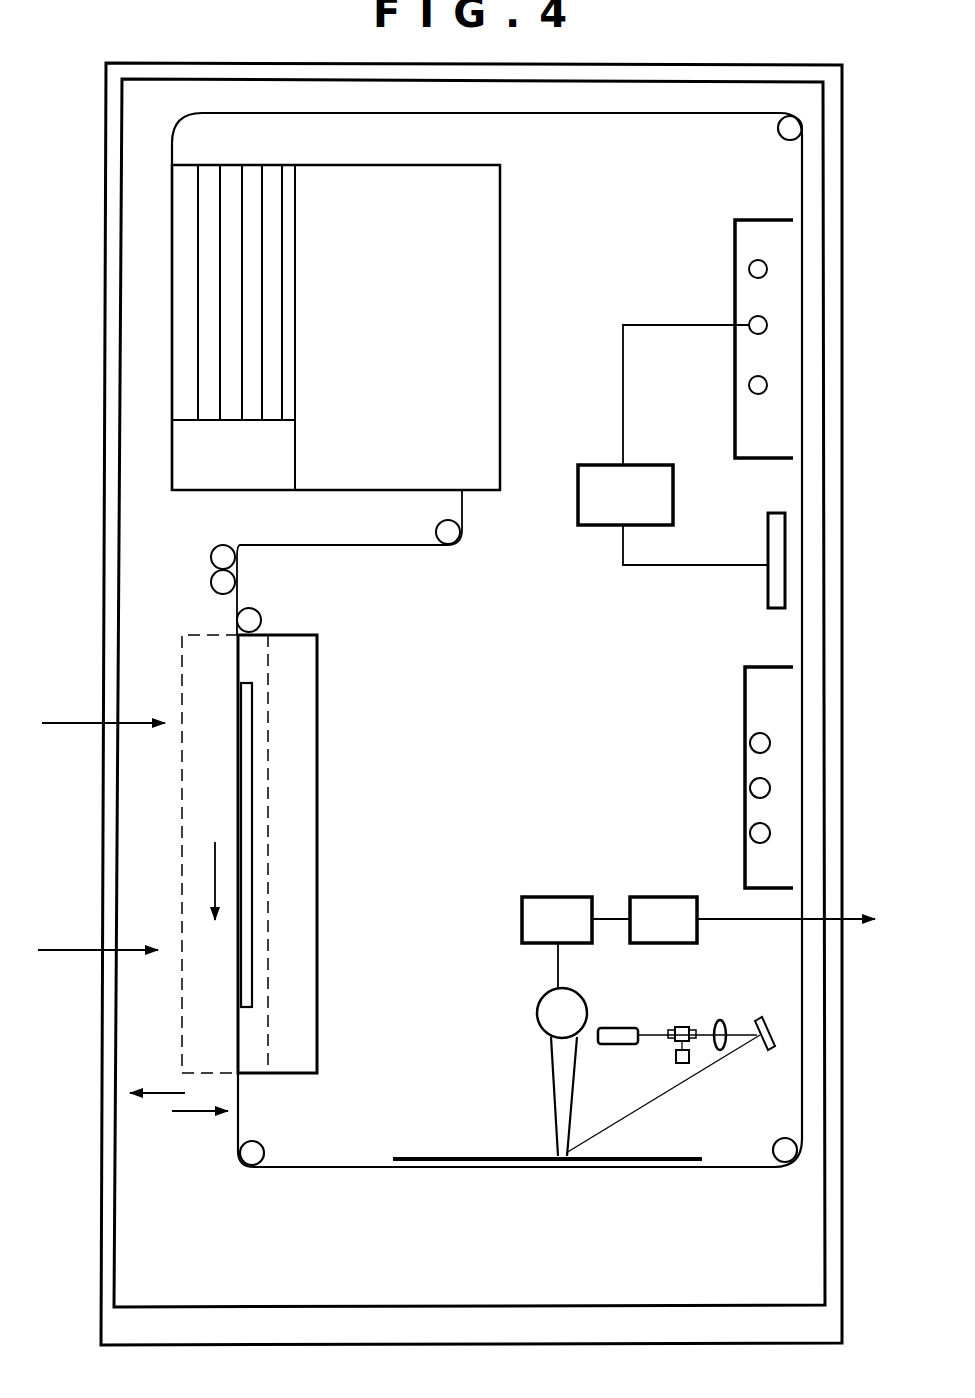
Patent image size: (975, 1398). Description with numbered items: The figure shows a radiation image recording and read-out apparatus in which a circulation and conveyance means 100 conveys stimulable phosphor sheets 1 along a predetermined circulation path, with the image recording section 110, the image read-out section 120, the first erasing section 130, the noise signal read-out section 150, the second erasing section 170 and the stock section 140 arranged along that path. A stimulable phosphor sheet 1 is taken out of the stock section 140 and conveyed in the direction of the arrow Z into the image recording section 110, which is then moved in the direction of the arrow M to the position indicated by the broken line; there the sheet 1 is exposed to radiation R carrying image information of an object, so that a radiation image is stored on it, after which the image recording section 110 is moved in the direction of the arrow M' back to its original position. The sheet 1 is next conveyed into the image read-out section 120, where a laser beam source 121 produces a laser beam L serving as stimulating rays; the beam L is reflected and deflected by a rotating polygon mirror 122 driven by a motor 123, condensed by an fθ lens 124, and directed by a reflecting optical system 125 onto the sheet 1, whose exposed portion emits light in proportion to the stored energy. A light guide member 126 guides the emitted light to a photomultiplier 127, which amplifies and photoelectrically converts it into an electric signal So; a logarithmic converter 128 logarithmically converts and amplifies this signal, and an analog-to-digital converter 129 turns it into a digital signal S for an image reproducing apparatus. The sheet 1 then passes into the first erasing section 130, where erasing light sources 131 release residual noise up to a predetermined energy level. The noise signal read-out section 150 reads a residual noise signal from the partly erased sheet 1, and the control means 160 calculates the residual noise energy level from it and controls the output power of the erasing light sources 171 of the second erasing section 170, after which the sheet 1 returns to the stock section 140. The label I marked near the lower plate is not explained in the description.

The stimulable phosphor sheet 1 is at (242, 776).
The circulation and conveyance means 100 is at (272, 546).
The image recording section 110 is at (318, 882).
The image read-out section 120 is at (463, 1128).
The laser beam source 121 is at (624, 1030).
The rotating polygon mirror 122 is at (686, 1028).
The motor 123 is at (678, 1060).
The fθ lens 124 is at (722, 1022).
The reflecting optical system 125 is at (767, 1050).
The light guide member 126 is at (552, 1085).
The photomultiplier 127 is at (552, 1018).
The logarithmic converter 128 is at (546, 912).
The analog-to-digital converter 129 is at (650, 910).
The first erasing section 130 is at (762, 695).
The erasing light source 131 is at (750, 745).
The stock section 140 is at (513, 158).
The noise signal read-out section 150 is at (768, 592).
The control means 160 is at (652, 513).
The second erasing section 170 is at (760, 238).
The erasing light source 171 is at (749, 269).
The radiation R is at (76, 724).
The arrow Z is at (214, 868).
The arrow M is at (157, 1064).
The arrow M' is at (200, 1145).
The digital signal S is at (718, 918).
The electric signal So is at (556, 962).
The laser beam L is at (657, 1100).
The record plate I is at (618, 1165).